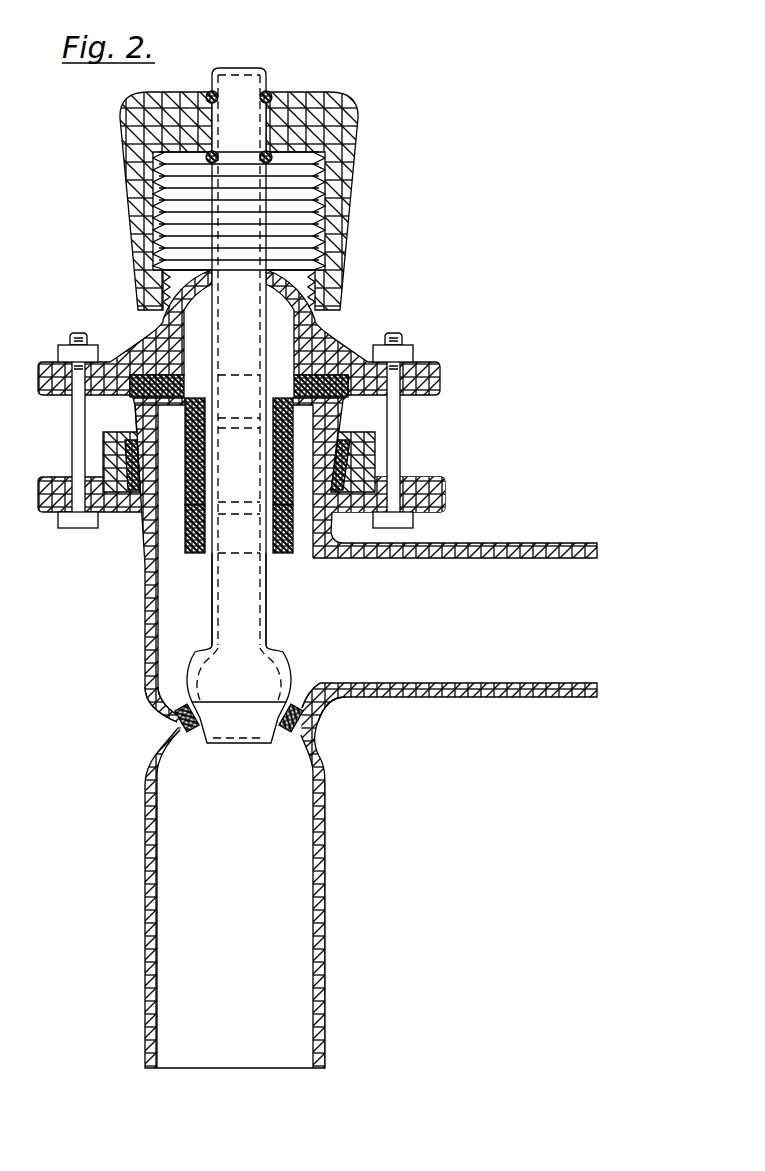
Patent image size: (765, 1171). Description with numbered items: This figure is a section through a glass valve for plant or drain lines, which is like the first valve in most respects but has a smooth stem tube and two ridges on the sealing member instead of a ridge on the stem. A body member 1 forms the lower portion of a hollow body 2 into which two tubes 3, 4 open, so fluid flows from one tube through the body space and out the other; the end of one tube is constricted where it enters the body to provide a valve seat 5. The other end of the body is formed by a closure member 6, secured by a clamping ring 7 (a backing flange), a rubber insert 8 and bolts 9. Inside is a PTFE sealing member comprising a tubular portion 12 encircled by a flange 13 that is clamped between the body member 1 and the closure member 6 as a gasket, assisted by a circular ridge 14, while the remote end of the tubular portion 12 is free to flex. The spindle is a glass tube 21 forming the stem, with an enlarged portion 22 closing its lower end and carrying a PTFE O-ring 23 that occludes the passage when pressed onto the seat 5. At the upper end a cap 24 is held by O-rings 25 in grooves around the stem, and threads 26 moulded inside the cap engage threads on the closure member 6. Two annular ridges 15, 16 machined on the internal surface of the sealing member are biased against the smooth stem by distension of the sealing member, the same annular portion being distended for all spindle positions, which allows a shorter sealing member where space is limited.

The body member 1 is at (152, 690).
The hollow body 2 is at (278, 598).
The tube 3 is at (412, 632).
The tube 4 is at (193, 835).
The valve seat 5 is at (172, 720).
The closure member 6 is at (322, 350).
The clamping ring 7 is at (425, 502).
The rubber insert 8 is at (341, 473).
The bolts 9 is at (396, 412).
The tubular portion 12 is at (193, 453).
The flange 13 is at (135, 380).
The circular ridge 14 is at (132, 412).
The annular ridge 15 is at (293, 420).
The annular ridge 16 is at (190, 511).
The glass tube 21 is at (233, 598).
The enlarged portion 22 is at (263, 674).
The PTFE O-ring 23 is at (182, 713).
The cap 24 is at (322, 108).
The O-rings 25 is at (271, 153).
The threads 26 is at (327, 169).